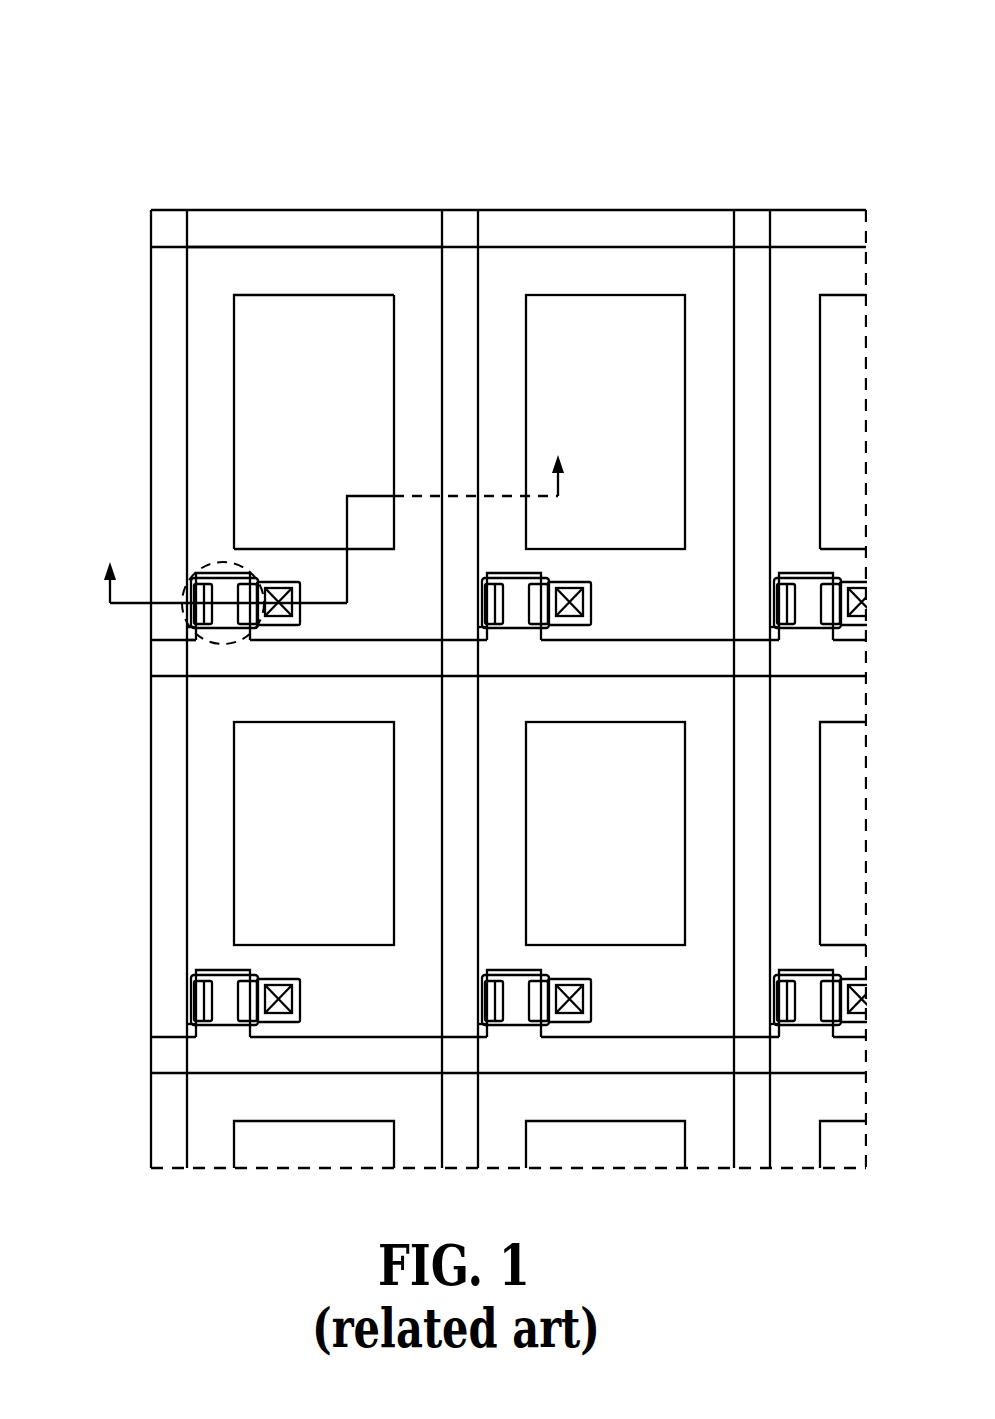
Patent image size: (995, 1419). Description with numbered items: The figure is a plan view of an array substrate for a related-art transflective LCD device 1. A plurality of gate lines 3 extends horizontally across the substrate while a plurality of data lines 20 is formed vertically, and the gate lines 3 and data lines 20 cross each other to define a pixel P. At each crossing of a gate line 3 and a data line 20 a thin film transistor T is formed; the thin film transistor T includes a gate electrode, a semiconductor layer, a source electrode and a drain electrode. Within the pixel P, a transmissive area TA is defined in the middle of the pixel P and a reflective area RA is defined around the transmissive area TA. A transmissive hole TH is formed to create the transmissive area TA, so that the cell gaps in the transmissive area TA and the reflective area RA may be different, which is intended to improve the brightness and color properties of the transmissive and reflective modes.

The transflective LCD device 1 is at (458, 585).
The gate line 3 is at (300, 228).
The pixel P is at (372, 258).
The reflective area RA is at (212, 277).
The transmissive hole TH is at (220, 350).
The transmissive area TA is at (257, 412).
The data line 20 is at (173, 482).
The thin film transistor T is at (197, 563).